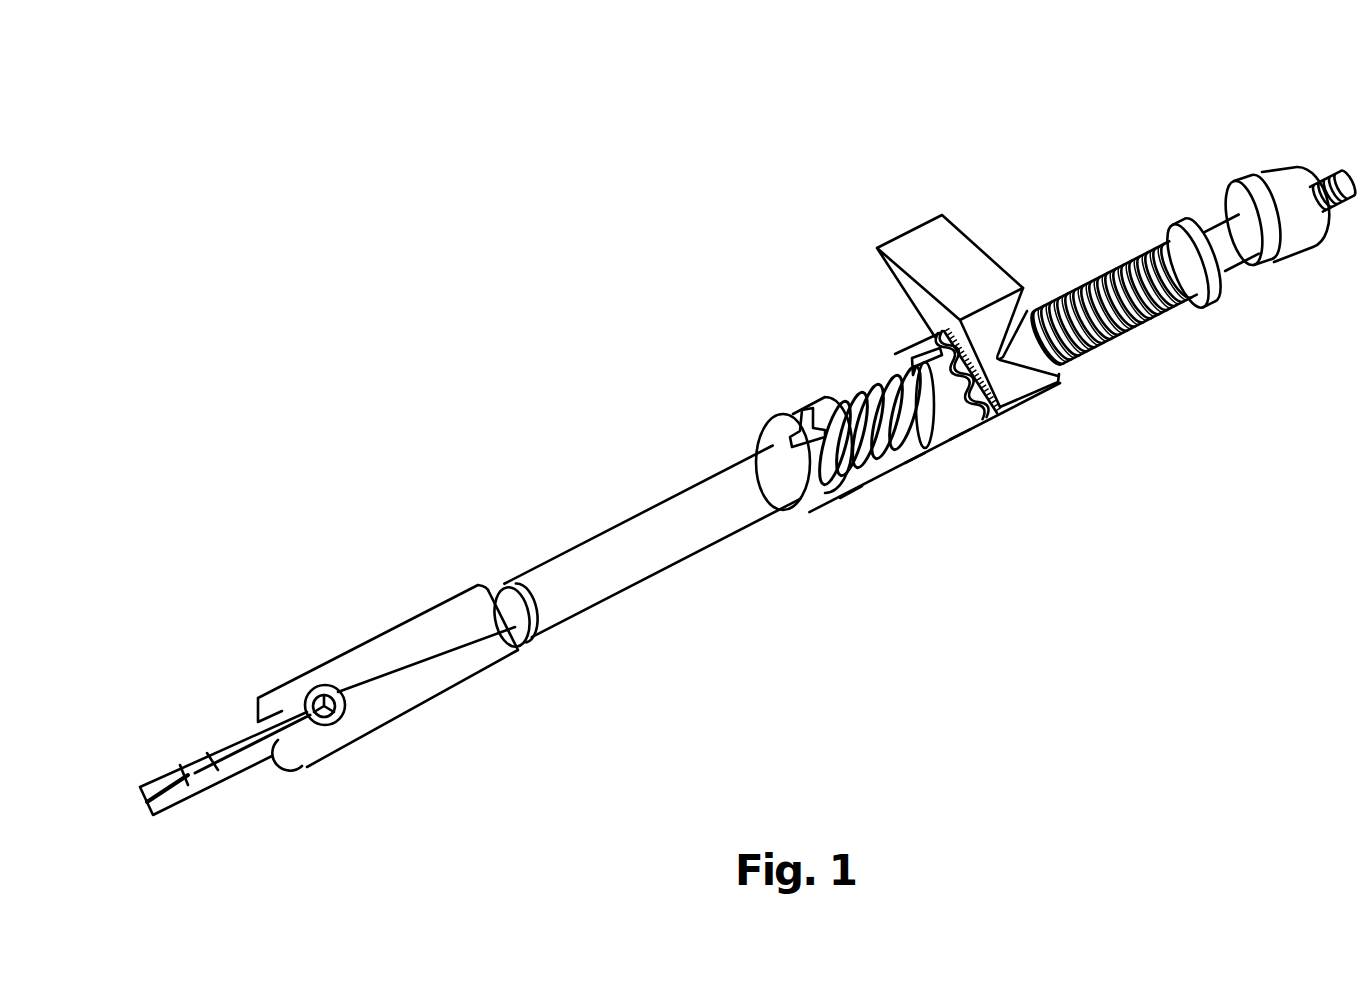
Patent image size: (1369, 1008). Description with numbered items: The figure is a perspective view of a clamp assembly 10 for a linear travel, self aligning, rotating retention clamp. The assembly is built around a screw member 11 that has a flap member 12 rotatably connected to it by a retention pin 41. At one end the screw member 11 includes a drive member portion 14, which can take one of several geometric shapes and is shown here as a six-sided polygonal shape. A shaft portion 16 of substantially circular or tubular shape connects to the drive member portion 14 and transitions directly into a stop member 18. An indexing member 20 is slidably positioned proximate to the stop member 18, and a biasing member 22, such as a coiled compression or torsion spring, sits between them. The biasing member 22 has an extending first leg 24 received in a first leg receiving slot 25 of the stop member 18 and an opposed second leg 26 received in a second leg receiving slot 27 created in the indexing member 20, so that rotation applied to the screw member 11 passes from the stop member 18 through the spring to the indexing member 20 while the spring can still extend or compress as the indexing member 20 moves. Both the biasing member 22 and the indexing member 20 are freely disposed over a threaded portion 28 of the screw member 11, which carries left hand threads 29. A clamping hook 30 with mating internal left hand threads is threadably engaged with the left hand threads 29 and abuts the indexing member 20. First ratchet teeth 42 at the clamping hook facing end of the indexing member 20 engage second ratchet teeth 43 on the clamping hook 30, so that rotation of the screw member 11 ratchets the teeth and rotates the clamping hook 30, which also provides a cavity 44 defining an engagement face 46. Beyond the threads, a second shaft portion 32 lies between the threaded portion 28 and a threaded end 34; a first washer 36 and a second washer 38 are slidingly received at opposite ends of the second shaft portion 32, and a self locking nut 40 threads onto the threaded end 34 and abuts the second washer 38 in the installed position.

The clamp assembly 10 is at (703, 268).
The screw member 11 is at (572, 622).
The flap member 12 is at (232, 765).
The drive member portion 14 is at (430, 623).
The shaft portion 16 is at (630, 515).
The stop member 18 is at (829, 512).
The indexing member 20 is at (975, 435).
The biasing member 22 is at (865, 403).
The first leg 24 is at (800, 430).
The first leg receiving slot 25 is at (855, 506).
The second leg 26 is at (930, 360).
The second leg receiving slot 27 is at (958, 432).
The threaded portion 28 is at (916, 472).
The left hand threads 29 is at (1151, 320).
The clamping hook 30 is at (960, 245).
The second shaft portion 32 is at (1222, 248).
The threaded end 34 is at (1323, 172).
The first washer 36 is at (1168, 226).
The second washer 38 is at (1234, 190).
The self locking nut 40 is at (1266, 188).
The retention pin 41 is at (322, 694).
The first ratchet teeth 42 is at (978, 388).
The second ratchet teeth 43 is at (985, 415).
The cavity 44 is at (1022, 334).
The engagement face 46 is at (1020, 323).